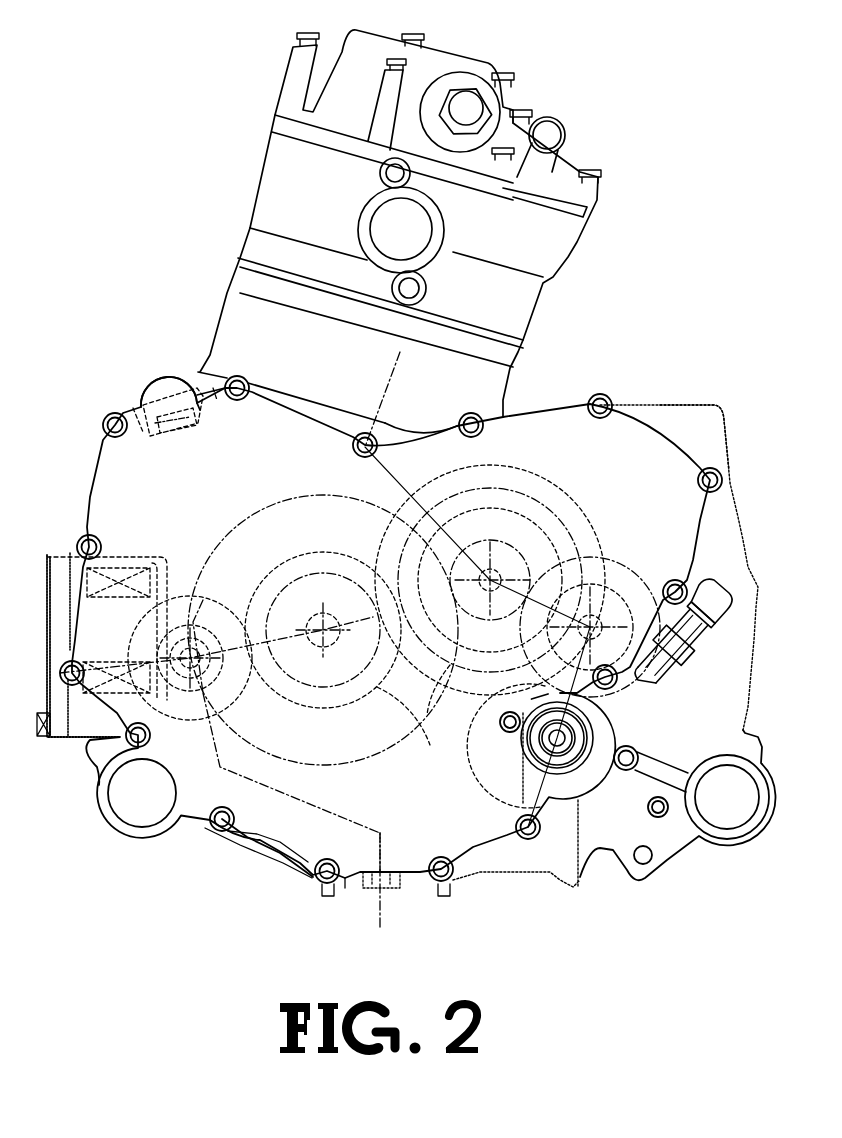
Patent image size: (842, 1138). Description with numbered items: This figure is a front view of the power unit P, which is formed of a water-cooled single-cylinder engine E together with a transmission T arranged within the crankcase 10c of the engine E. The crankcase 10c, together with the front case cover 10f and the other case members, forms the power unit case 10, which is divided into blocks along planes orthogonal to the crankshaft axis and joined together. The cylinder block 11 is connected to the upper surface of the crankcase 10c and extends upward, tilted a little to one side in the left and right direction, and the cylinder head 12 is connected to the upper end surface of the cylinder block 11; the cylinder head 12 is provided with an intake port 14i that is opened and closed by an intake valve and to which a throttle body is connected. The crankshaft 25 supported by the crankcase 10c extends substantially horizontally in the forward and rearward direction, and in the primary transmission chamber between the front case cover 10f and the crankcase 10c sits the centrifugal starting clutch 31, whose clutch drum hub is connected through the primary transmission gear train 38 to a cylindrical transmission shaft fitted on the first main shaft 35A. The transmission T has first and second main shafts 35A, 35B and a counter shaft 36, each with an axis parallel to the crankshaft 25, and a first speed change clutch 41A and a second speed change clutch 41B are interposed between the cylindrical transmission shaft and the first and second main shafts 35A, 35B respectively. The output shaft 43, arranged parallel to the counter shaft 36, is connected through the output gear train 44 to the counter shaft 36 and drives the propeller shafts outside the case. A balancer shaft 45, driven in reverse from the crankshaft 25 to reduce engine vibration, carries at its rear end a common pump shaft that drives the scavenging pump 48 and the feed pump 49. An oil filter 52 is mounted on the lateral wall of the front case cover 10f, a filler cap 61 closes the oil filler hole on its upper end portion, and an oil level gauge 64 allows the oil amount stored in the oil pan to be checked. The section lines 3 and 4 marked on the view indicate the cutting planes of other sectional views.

The power unit P is at (600, 119).
The engine E is at (535, 311).
The cylinder head 12 is at (327, 206).
The intake port 14i is at (424, 225).
The cylinder block 11 is at (293, 357).
The power unit case 10 is at (555, 403).
The crankcase 10c is at (693, 420).
The front case cover 10f is at (287, 823).
The filler cap 61 is at (157, 382).
The oil filter 52 is at (53, 558).
The balancer shaft 45 is at (160, 550).
The scavenging pump 48 is at (190, 615).
The feed pump 49 is at (203, 600).
The crankshaft 25 is at (300, 653).
The centrifugal starting clutch 31 is at (345, 768).
The primary transmission gear train 38 is at (423, 727).
The first main shaft 35A is at (490, 561).
The second main shaft 35B is at (490, 565).
The first speed change clutch 41A is at (499, 571).
The second speed change clutch 41B is at (567, 503).
The output gear train 44 is at (513, 648).
The counter shaft 36 is at (645, 586).
The transmission T is at (607, 509).
The output shaft 43 is at (570, 747).
The oil level gauge 64 is at (700, 635).
The section line 3- 3 is at (400, 362).
The section line 4- 4 is at (360, 620).